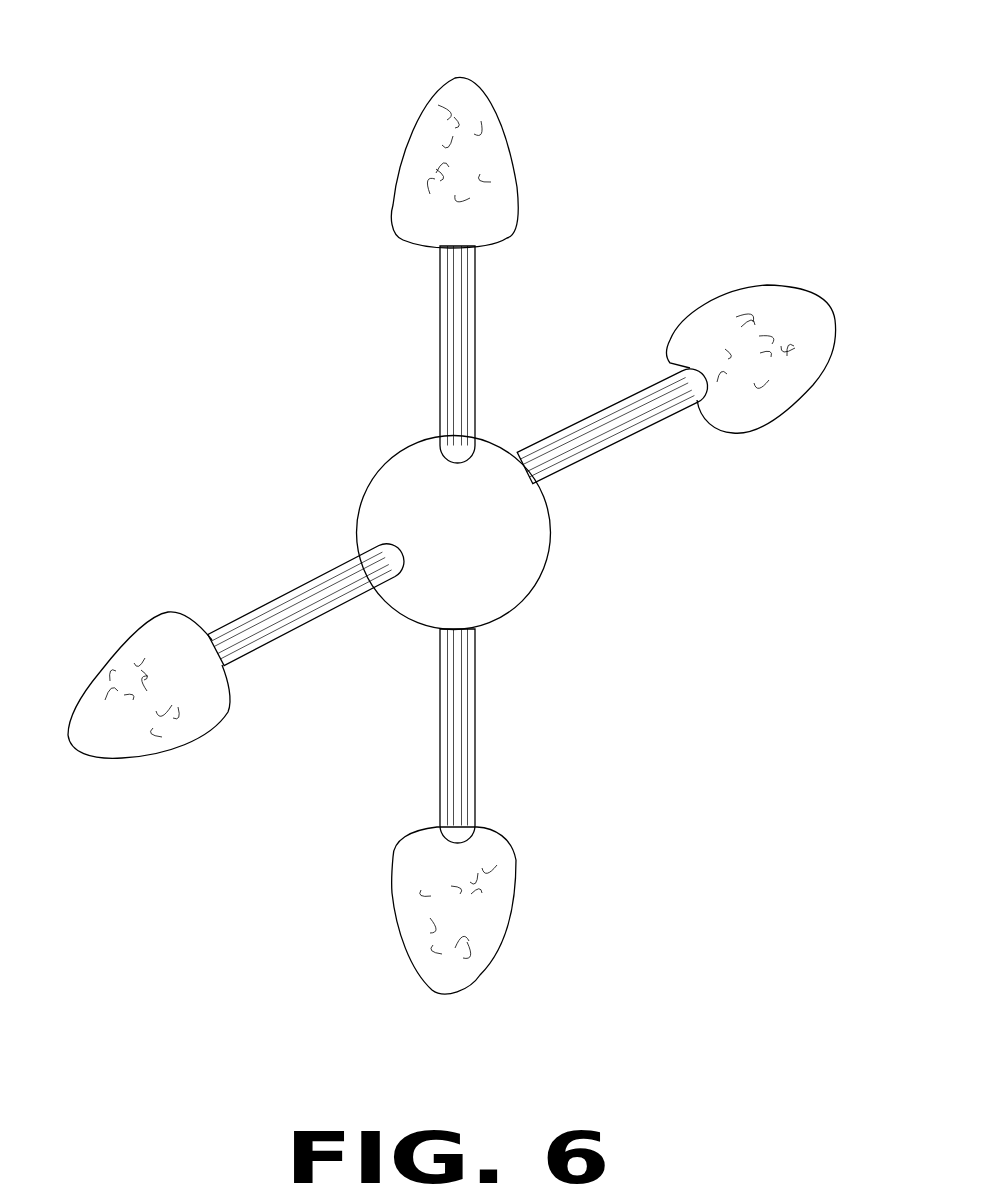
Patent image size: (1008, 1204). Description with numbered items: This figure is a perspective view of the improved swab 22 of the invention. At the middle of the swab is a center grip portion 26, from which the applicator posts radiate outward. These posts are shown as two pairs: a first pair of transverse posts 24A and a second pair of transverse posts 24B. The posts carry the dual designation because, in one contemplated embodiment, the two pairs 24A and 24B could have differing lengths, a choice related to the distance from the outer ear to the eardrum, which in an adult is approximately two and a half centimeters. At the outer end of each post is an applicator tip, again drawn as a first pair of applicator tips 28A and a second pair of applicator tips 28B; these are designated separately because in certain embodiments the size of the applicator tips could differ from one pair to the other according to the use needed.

The improved swab 22 is at (268, 323).
The 1st pair transverse posts 24A is at (457, 372).
The 2nd pair transverse posts 24B is at (593, 447).
The center grip portion 26 is at (496, 551).
The 1st pair applicator tips 28A is at (463, 107).
The 2nd pair applicator tips 28B is at (787, 303).